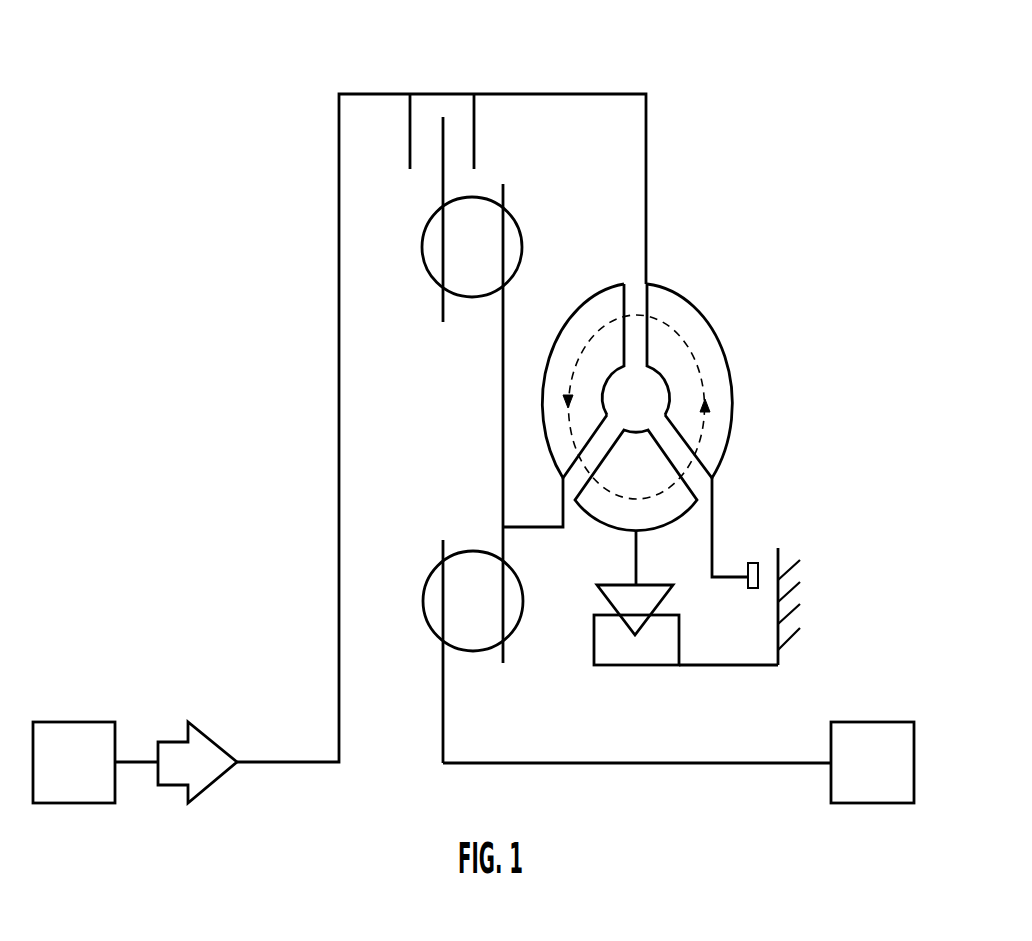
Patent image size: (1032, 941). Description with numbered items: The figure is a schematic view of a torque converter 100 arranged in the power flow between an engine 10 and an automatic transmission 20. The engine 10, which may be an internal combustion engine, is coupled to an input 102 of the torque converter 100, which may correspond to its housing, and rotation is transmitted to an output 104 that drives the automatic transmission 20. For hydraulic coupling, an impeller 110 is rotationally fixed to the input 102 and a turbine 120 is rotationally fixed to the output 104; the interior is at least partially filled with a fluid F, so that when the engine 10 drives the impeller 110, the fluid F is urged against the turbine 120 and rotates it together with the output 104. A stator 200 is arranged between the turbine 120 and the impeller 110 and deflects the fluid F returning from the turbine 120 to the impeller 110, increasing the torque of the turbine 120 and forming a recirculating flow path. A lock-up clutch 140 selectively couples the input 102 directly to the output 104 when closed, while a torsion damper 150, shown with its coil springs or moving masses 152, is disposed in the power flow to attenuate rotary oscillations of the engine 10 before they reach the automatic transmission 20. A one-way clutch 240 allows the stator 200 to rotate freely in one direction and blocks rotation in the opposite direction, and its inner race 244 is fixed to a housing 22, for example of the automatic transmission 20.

The torque converter 100 is at (753, 76).
The engine 10 is at (84, 779).
The automatic transmission 20 is at (882, 779).
The input 102 is at (339, 438).
The output 104 is at (600, 763).
The lock-up clutch 140 is at (475, 128).
The torsion damper 150 is at (502, 395).
The coil springs and moving masses 152 is at (425, 261).
The impeller 110 is at (715, 332).
The turbine 120 is at (593, 293).
The stator 200 is at (607, 525).
The one-way clutch 240 is at (668, 593).
The inner race 244 is at (637, 650).
The housing 22 is at (778, 548).
The fluid F is at (710, 428).